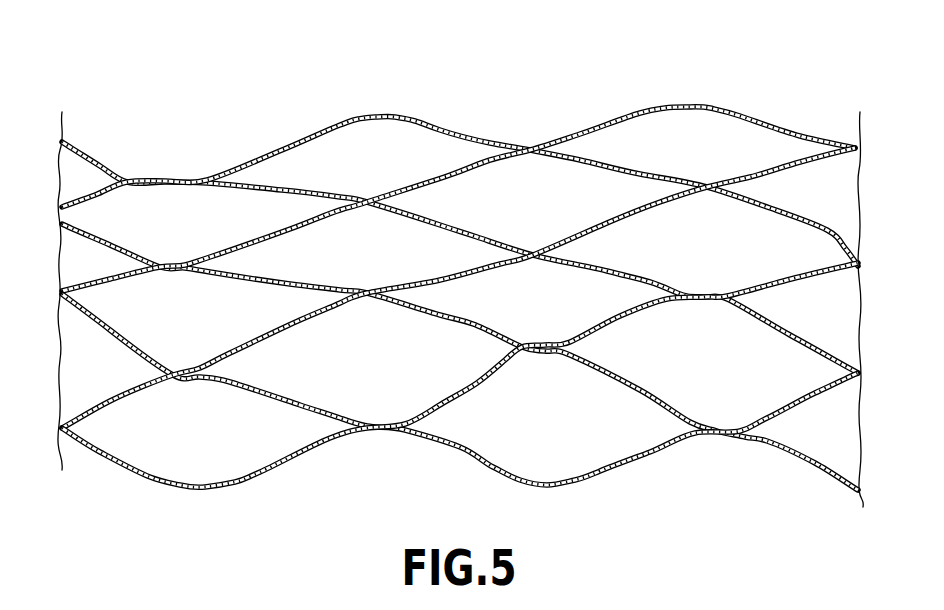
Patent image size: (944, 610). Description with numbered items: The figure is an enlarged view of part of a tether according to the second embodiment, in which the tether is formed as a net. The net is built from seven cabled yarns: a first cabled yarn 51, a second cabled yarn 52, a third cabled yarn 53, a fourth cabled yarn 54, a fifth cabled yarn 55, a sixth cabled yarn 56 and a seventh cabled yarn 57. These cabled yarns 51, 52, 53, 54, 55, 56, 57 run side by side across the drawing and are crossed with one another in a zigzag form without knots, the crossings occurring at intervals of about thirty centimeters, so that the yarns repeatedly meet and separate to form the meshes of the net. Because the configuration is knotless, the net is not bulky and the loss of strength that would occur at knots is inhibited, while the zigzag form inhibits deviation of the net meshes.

The first cabled yarn 51 is at (610, 121).
The second cabled yarn 52 is at (636, 160).
The third cabled yarn 53 is at (477, 233).
The fourth cabled yarn 54 is at (650, 270).
The fifth cabled yarn 55 is at (470, 314).
The sixth cabled yarn 56 is at (640, 378).
The seventh cabled yarn 57 is at (497, 465).